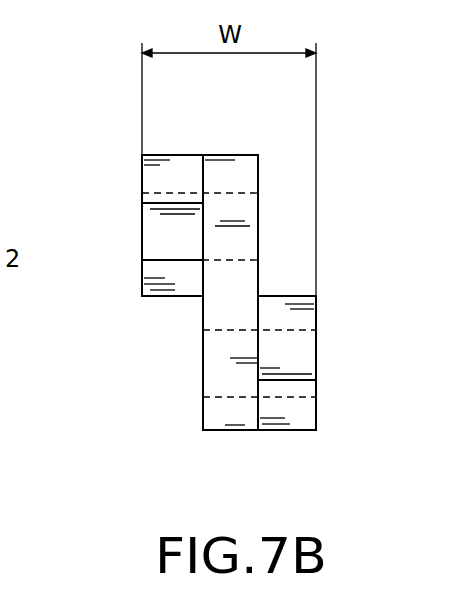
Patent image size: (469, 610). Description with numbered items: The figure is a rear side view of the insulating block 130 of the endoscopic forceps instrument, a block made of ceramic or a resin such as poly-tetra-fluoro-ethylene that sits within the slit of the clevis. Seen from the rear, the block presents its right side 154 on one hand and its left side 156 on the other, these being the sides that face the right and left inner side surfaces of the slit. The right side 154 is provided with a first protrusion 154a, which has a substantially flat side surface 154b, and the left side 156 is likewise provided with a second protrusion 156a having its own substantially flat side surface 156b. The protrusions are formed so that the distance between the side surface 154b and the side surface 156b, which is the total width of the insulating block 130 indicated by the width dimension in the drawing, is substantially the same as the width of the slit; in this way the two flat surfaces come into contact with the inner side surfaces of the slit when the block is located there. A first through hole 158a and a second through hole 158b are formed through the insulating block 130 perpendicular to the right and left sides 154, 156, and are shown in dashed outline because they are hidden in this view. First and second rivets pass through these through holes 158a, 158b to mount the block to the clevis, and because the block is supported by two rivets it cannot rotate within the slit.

The insulating block 130 is at (229, 130).
The right side 154 is at (93, 316).
The first protrusion 154a is at (141, 279).
The side surface 154b is at (141, 178).
The left side 156 is at (334, 252).
The second protrusion 156a is at (316, 305).
The side surface 156b is at (318, 412).
The first through hole 158a is at (224, 398).
The second through hole 158b is at (141, 249).